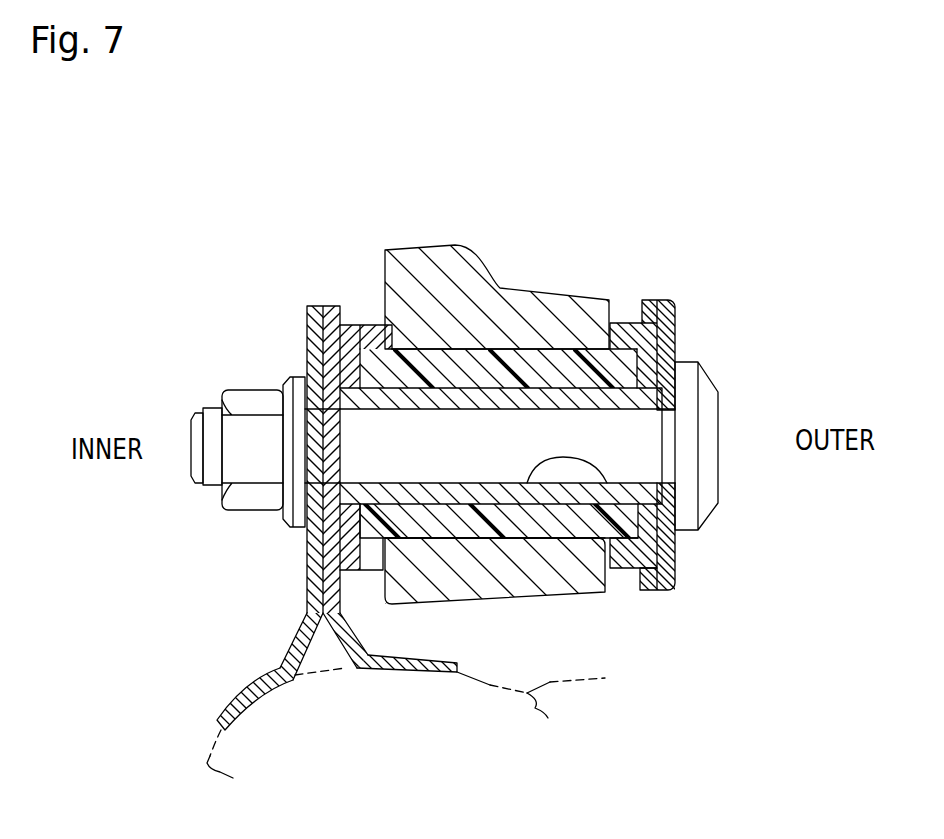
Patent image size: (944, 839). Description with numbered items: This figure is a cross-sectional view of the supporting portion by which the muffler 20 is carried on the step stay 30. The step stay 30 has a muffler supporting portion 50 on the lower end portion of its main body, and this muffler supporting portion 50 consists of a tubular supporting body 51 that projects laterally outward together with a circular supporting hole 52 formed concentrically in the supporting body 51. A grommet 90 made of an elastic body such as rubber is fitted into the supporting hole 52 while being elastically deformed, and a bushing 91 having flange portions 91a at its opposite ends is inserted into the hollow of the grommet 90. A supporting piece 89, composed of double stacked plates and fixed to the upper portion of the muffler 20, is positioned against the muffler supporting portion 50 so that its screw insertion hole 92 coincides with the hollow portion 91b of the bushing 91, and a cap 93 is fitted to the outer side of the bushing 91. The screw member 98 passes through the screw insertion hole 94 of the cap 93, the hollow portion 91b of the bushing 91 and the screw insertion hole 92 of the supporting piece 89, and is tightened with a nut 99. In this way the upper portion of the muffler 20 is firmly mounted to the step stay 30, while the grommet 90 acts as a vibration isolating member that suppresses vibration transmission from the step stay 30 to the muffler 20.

The muffler 20 is at (361, 695).
The step stay 30 is at (485, 368).
The muffler supporting portion 50 is at (485, 368).
The supporting body 51 is at (540, 300).
The supporting hole 52 is at (452, 350).
The supporting piece 89 is at (307, 596).
The grommet 90 is at (492, 530).
The bushing 91 is at (497, 450).
The flange portions 91a is at (353, 333).
The hollow portion 91b is at (610, 483).
The screw insertion hole 92 is at (325, 478).
The cap 93 is at (675, 327).
The screw insertion hole 94 is at (673, 417).
The screw member 98 is at (705, 482).
The nut 99 is at (247, 403).